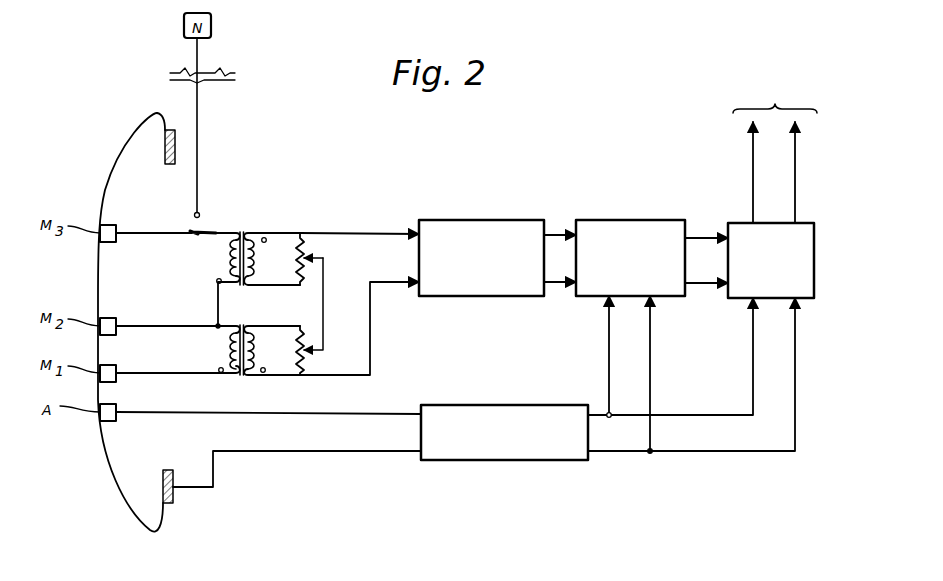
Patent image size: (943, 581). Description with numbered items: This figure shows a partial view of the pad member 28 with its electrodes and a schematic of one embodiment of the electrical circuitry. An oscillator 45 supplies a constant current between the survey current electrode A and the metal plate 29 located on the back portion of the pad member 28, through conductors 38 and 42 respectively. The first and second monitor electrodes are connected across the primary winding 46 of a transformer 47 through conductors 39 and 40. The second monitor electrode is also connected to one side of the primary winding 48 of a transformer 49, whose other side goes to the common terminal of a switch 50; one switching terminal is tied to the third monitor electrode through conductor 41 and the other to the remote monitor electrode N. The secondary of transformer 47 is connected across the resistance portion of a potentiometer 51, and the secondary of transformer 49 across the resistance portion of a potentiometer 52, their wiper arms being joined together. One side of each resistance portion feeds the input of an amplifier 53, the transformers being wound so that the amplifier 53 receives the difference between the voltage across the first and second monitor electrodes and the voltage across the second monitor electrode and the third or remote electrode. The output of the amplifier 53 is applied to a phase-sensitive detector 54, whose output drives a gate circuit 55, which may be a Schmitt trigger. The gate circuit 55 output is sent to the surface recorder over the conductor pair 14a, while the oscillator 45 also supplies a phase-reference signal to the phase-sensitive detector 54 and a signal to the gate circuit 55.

The pad member 28 is at (112, 163).
The metal plate 29 is at (176, 500).
The conductor 41 is at (137, 230).
The switch 50 is at (203, 231).
The conductor 40 is at (144, 324).
The conductor 39 is at (152, 372).
The conductor 38 is at (147, 416).
The conductor 42 is at (314, 452).
The transformer 49 is at (234, 255).
The primary winding 48 is at (226, 255).
The potentiometer 52 is at (310, 246).
The transformer 47 is at (241, 337).
The primary winding 46 is at (226, 350).
The potentiometer 51 is at (310, 350).
The amplifier 53 is at (487, 219).
The phase-sensitive detector 54 is at (586, 300).
The gate circuit 55 is at (736, 302).
The conductor pair 14a is at (754, 146).
The oscillator 45 is at (495, 404).